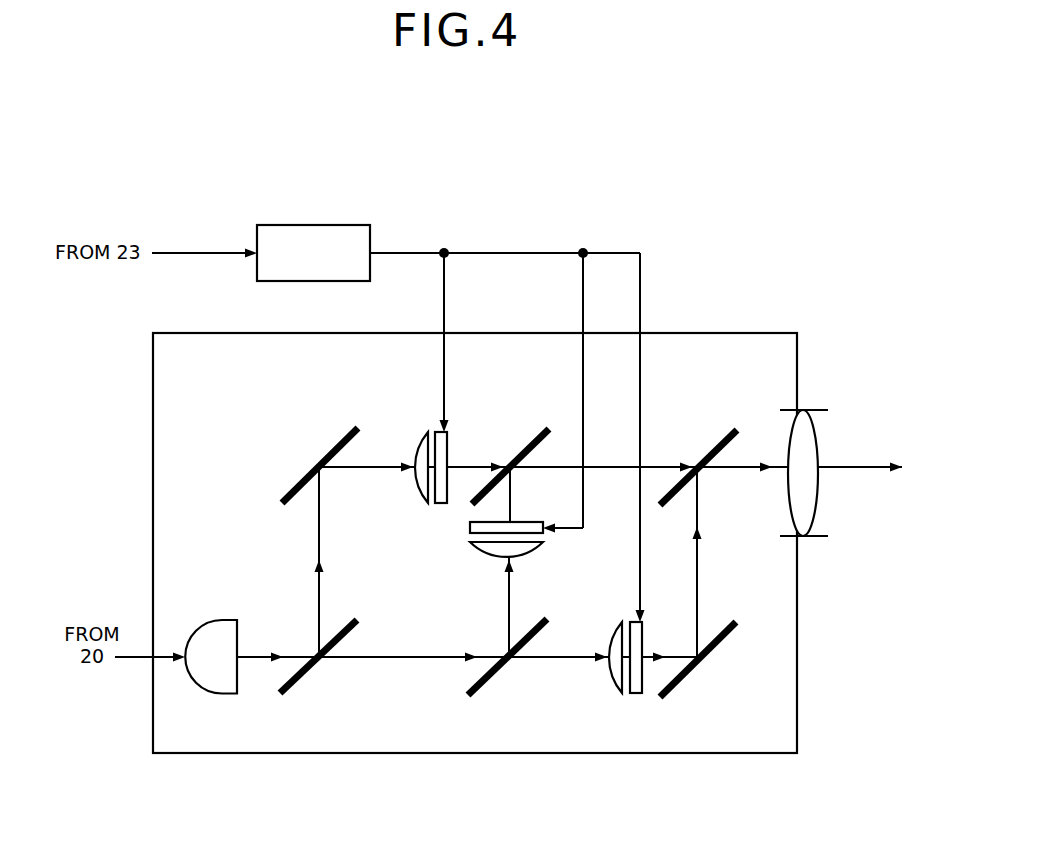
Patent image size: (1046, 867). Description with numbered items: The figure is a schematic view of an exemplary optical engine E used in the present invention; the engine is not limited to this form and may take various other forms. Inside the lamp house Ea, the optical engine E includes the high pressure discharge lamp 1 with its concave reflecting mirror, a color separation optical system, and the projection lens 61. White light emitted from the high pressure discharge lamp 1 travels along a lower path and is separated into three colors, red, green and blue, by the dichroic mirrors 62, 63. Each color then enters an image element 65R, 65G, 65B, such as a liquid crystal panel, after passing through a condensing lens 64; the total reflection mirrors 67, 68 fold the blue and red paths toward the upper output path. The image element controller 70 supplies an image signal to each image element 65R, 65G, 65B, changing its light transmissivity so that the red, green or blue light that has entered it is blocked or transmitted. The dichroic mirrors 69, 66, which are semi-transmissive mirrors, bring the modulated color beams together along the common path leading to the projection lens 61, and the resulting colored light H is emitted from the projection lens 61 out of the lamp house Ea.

The image element controller 70 is at (313, 253).
The high pressure discharge lamp 1 is at (205, 637).
The dichroic mirror 62 is at (300, 673).
The dichroic mirror 63 is at (492, 673).
The condensing lens 64 is at (420, 455).
The image element 65B is at (447, 453).
The image element 65G is at (470, 530).
The image element 65R is at (636, 694).
The dichroic mirror 66 is at (715, 448).
The total reflection mirror 67 is at (338, 445).
The total reflection mirror 68 is at (680, 672).
The dichroic mirror 69 is at (527, 442).
The projection lens 61 is at (810, 452).
The optical engine E is at (790, 325).
The colored light H is at (840, 475).
The lamp house Ea is at (482, 753).